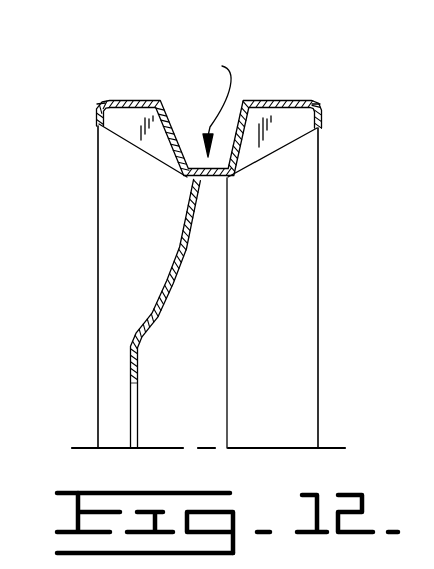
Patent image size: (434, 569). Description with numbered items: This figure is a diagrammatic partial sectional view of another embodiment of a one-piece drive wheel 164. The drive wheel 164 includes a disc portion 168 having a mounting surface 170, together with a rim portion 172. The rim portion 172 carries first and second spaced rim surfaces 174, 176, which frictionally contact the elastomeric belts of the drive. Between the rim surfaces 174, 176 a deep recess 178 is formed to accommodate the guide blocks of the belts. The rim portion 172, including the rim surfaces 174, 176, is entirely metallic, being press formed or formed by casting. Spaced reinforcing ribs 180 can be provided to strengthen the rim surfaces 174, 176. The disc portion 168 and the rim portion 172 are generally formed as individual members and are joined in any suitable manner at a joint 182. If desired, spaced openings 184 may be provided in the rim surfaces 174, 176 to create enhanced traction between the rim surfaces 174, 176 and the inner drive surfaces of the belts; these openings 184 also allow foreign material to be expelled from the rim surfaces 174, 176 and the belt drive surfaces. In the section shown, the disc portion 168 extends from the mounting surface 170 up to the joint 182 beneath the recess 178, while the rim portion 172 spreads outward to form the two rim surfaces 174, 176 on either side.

The drive wheel 164 is at (318, 185).
The disc portion 168 is at (183, 250).
The mounting surface 170 is at (130, 345).
The rim portion 172 is at (97, 118).
The first rim surface 174 is at (106, 101).
The second rim surface 176 is at (312, 102).
The deep recess 178 is at (204, 105).
The reinforcing ribs 180 is at (127, 133).
The joint 182 is at (197, 194).
The spaced openings 184 is at (132, 101).